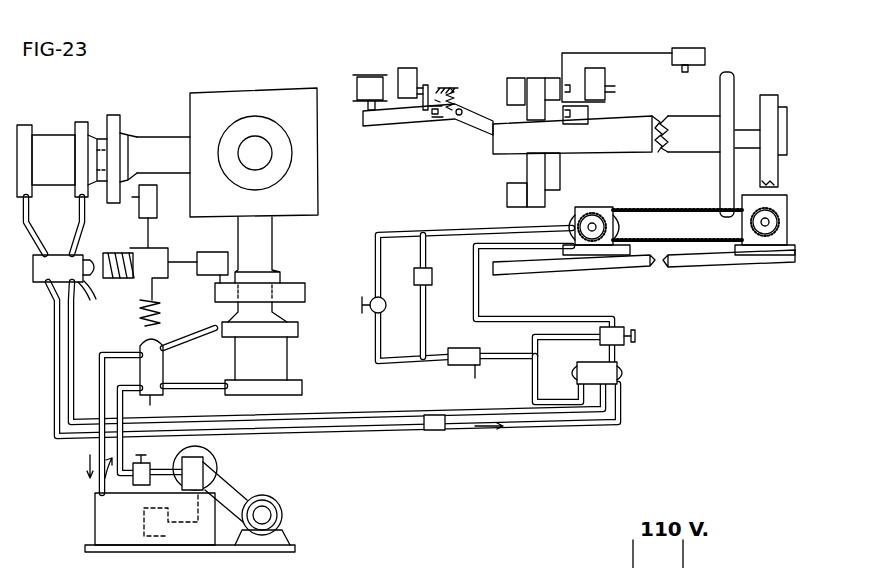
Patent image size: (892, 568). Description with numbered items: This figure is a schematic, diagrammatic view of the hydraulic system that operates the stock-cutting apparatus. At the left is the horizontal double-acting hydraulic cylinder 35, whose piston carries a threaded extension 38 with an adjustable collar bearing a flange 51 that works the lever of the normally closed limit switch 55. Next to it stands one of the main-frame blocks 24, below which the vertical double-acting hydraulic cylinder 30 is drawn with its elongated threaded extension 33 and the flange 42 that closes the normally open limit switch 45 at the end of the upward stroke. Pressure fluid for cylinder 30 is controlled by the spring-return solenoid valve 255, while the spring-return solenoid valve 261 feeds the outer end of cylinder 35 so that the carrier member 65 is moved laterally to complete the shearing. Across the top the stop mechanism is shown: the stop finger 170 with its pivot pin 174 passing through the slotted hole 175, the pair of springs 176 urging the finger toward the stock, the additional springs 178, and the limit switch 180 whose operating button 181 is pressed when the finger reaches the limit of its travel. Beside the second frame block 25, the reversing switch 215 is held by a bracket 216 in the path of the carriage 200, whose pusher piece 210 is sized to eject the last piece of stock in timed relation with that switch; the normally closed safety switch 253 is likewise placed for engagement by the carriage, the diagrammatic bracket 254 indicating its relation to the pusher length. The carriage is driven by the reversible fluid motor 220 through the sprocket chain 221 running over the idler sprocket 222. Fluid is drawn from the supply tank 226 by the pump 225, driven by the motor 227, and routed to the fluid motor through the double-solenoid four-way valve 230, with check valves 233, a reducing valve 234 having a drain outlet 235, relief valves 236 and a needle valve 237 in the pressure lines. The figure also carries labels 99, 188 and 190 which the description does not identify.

The block 24 is at (236, 95).
The block 25 is at (556, 80).
The double-acting hydraulic cylinder 30 is at (282, 352).
The threaded extension 33 is at (268, 278).
The double-acting hydraulic cylinder 35 is at (47, 145).
The threaded extension 38 is at (124, 135).
The flange 42 is at (300, 290).
The limit switch 45 is at (212, 255).
The flange 51 is at (107, 120).
The limit switch 55 is at (150, 206).
The carrier member 65 is at (536, 98).
The shaft break 99 is at (652, 118).
The stop finger 170 is at (392, 116).
The pivot pin 174 is at (437, 118).
The slotted hole 175 is at (432, 118).
The springs 176 is at (456, 118).
The springs 178 is at (462, 100).
The limit switch 180 is at (403, 68).
The operating button 181 is at (426, 85).
The link 188 is at (368, 104).
The solenoid 190 is at (358, 82).
The carriage 200 is at (725, 72).
The pusher piece 210 is at (697, 125).
The reversing switch 215 is at (594, 72).
The bracket 216 is at (590, 110).
The reversible fluid motor 220 is at (598, 205).
The sprocket chain 221 is at (665, 208).
The idler sprocket 222 is at (762, 235).
The pump 225 is at (200, 468).
The supply tank 226 is at (100, 518).
The motor 227 is at (284, 513).
The four-way valve 230 is at (617, 374).
The check valves 233 is at (432, 288).
The reducing valve 234 is at (455, 368).
The drain outlet 235 is at (478, 372).
The relief valves 236 is at (620, 328).
The needle valve 237 is at (372, 310).
The safety switch 253 is at (690, 48).
The bracket 254 is at (652, 50).
The solenoid valve 255 is at (133, 339).
The solenoid valve 261 is at (99, 252).